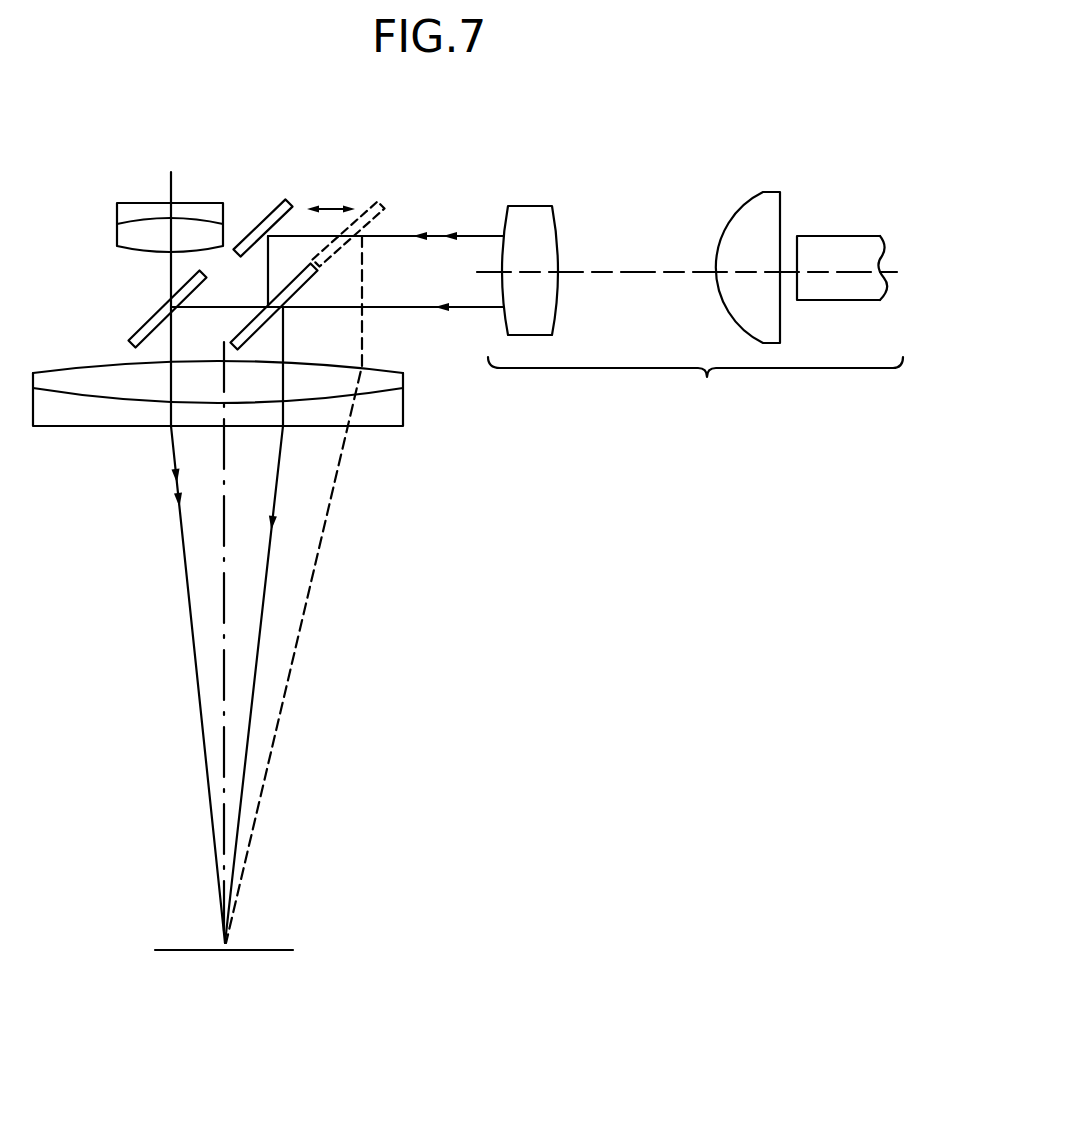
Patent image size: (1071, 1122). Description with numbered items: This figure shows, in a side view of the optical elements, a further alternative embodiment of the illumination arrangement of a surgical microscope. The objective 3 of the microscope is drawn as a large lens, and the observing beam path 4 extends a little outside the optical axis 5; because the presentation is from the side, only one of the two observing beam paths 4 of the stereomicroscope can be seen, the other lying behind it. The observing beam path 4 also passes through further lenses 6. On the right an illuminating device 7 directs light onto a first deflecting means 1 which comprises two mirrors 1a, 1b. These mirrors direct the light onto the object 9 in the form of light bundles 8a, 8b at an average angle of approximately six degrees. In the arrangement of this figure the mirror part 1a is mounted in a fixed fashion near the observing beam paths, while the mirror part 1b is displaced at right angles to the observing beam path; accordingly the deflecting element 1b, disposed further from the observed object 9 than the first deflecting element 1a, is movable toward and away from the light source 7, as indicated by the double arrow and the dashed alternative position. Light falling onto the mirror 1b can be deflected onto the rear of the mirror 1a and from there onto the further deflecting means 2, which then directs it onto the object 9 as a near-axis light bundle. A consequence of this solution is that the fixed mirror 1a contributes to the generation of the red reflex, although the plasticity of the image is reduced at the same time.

The first deflecting means 1 is at (307, 228).
The mirror part 1a is at (283, 299).
The mirror part 1b is at (250, 234).
The further deflecting means 2 is at (150, 326).
The objective 3 is at (106, 419).
The observing beam path 4 is at (195, 661).
The optical axis 5 is at (224, 717).
The further lenses 6 is at (129, 238).
The illuminating device 7 is at (690, 302).
The light bundle 8a is at (278, 478).
The light bundle 8b is at (206, 308).
The object 9 is at (277, 950).